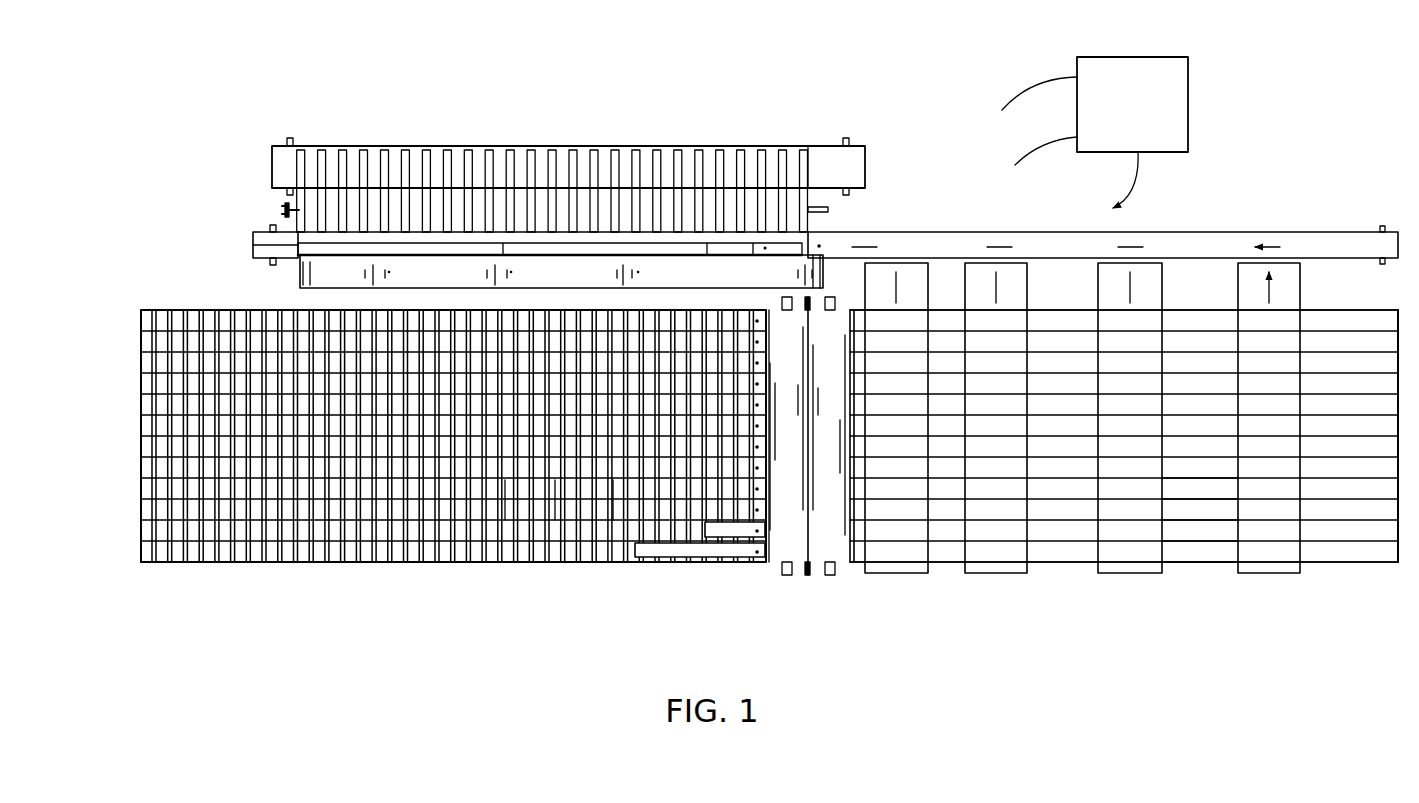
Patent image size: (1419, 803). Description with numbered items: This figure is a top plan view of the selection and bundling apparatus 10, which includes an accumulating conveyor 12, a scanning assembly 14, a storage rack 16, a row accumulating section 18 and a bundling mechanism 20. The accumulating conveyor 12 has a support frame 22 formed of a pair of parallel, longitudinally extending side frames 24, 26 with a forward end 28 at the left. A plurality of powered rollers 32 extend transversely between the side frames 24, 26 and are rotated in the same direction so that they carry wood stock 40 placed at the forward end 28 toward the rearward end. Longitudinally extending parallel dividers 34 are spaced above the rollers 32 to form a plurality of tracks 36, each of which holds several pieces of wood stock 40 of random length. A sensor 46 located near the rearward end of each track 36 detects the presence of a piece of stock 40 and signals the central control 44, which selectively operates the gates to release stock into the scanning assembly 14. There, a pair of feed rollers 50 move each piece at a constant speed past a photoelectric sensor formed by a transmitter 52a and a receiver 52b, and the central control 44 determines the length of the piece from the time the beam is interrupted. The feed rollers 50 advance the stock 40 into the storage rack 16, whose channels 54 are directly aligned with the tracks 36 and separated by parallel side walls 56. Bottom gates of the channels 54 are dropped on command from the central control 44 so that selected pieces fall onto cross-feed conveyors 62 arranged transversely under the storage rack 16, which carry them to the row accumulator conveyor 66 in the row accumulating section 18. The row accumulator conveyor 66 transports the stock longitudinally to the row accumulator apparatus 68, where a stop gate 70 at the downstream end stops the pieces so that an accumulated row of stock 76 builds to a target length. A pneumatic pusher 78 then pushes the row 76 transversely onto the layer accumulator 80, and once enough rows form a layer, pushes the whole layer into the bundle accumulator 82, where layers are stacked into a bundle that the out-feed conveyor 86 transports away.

The selection and bundling apparatus 10 is at (953, 100).
The accumulating conveyor 12 is at (490, 578).
The scanning assembly 14 is at (817, 595).
The storage rack 16 is at (1070, 563).
The row accumulating section 18 is at (1182, 217).
The bundling mechanism 20 is at (702, 140).
The support frame 22 is at (382, 565).
The side frame 24 is at (318, 565).
The side frame 26 is at (208, 310).
The forward end 28 is at (140, 535).
The powered rollers 32 is at (613, 507).
The dividers 34 is at (142, 523).
The track 36 is at (147, 368).
The wood stock 40 is at (733, 525).
The central control 44 is at (1121, 113).
The sensor 46 is at (758, 362).
The feed rollers 50 is at (823, 530).
The transmitter 52a is at (808, 572).
The receiver 52b is at (807, 302).
The channels 54 is at (1322, 553).
The side walls 56 is at (1182, 542).
The cross-feed conveyors 62 is at (1123, 297).
The row accumulator conveyor 66 is at (1267, 238).
The row accumulator apparatus 68 is at (333, 268).
The stop gate 70 is at (253, 243).
The accumulated row of stock 76 is at (570, 247).
The pneumatic pusher 78 is at (462, 275).
The layer accumulator 80 is at (272, 208).
The bundle accumulator 82 is at (400, 140).
The out-feed conveyor 86 is at (825, 158).